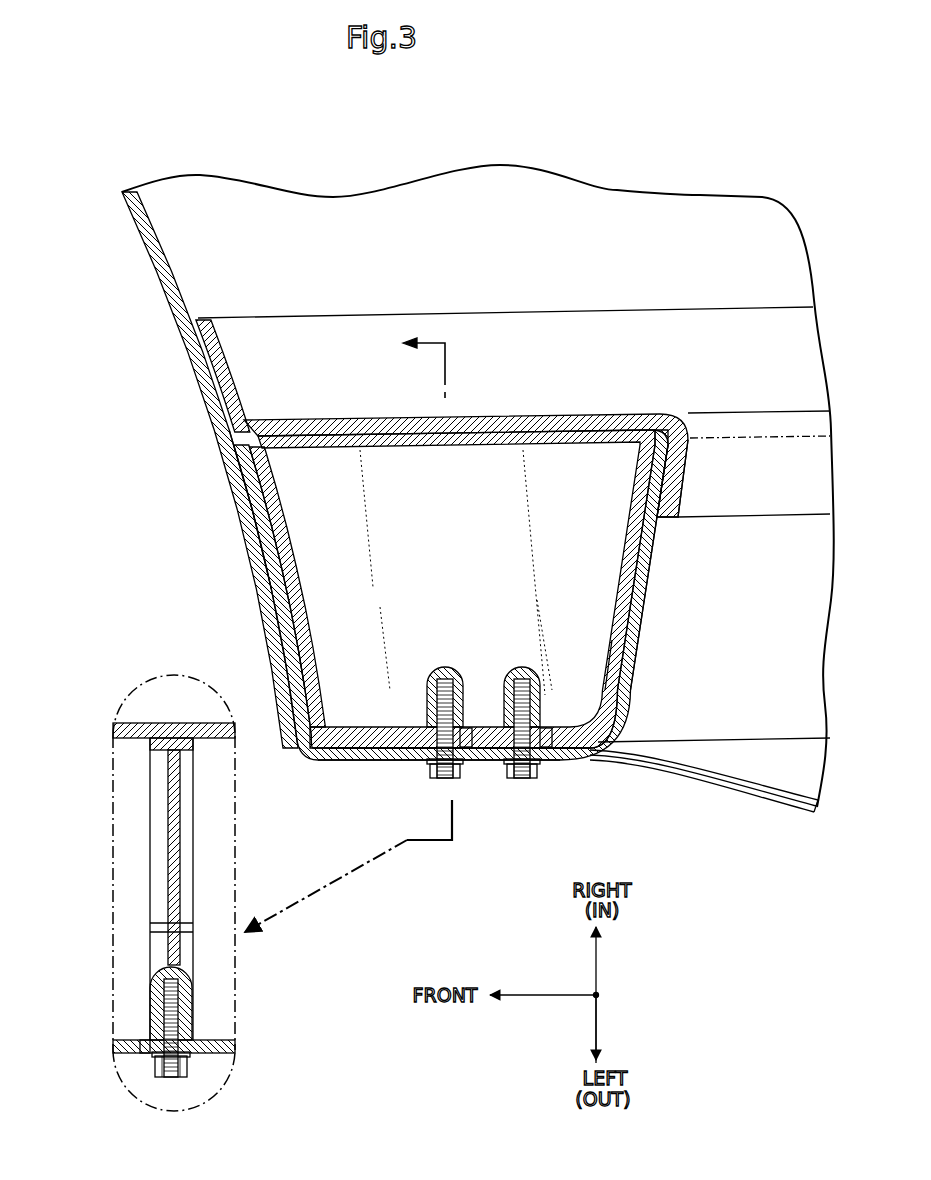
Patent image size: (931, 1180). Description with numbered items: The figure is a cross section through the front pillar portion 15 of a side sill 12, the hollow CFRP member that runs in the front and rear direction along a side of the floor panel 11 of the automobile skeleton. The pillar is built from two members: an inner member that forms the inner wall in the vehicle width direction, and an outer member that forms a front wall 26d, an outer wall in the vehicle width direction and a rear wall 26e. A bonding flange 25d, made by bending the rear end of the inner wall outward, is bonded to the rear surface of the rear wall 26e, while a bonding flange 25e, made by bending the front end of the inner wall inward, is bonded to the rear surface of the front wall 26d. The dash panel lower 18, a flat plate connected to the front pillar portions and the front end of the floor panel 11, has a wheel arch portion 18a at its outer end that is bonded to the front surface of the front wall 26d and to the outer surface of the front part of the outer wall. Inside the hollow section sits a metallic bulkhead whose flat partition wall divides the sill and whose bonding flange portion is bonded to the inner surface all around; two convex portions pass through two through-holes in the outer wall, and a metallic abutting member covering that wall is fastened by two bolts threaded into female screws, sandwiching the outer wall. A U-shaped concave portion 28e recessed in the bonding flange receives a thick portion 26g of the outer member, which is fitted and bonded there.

The floor panel 11 is at (622, 190).
The side sill 12 is at (524, 372).
The front pillar portion 15 is at (535, 400).
The dash panel lower 18 is at (170, 315).
The wheel arch portion 18a is at (240, 495).
The bonding flange 25d is at (680, 482).
The bonding flange 25e is at (232, 362).
The front wall 26d is at (262, 590).
The rear wall 26e is at (657, 585).
The thick portion 26g is at (612, 740).
The concave portion 28e is at (315, 672).